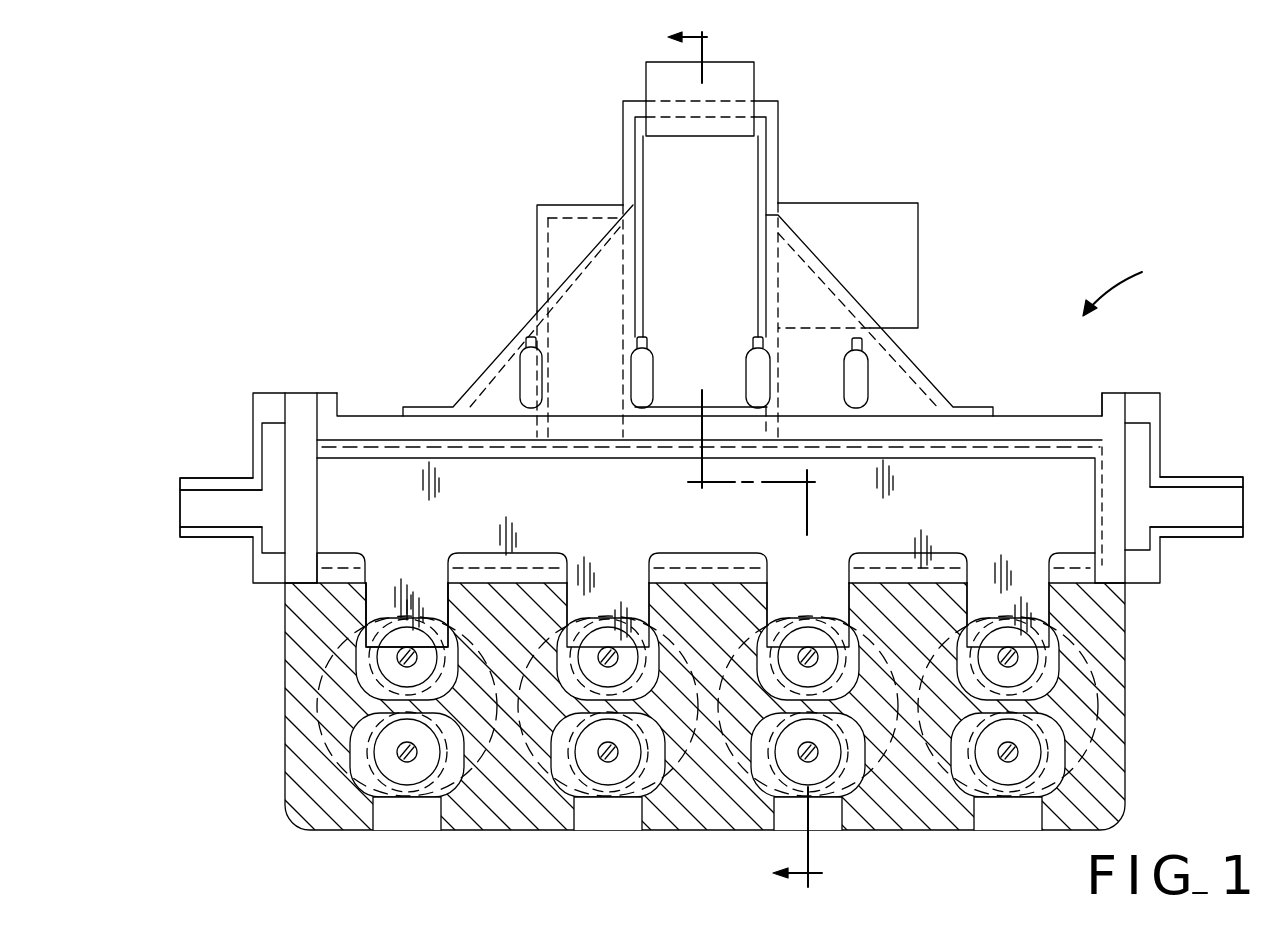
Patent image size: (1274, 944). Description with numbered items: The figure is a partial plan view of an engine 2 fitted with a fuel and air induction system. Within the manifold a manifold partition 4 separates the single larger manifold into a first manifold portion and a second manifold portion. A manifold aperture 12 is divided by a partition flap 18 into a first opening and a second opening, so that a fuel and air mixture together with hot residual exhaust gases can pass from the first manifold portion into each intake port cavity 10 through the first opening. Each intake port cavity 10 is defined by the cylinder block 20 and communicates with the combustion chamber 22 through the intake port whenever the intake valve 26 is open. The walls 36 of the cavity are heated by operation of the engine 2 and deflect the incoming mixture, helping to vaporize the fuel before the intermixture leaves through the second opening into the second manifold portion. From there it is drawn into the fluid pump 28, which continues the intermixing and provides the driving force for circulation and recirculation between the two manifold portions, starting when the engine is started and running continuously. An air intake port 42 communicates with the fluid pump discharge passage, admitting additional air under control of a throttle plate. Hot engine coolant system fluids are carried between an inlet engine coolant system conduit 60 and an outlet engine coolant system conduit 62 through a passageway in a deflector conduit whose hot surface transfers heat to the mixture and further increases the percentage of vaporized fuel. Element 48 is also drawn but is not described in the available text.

The engine 2 is at (907, 458).
The manifold partition 4 is at (1093, 562).
The intake port cavity 10 is at (806, 611).
The manifold aperture 12 is at (363, 607).
The partition flap 18 is at (754, 595).
The cylinder block 20 is at (1112, 758).
The combustion chamber 22 is at (699, 602).
The intake valve 26 is at (826, 648).
The fluid pump 28 is at (851, 203).
The walls of the cavity 36 is at (772, 665).
The air intake port 42 is at (742, 62).
The actuator cylinder 48 is at (630, 363).
The inlet engine coolant system conduit 60 is at (206, 478).
The outlet engine coolant system conduit 62 is at (1222, 477).